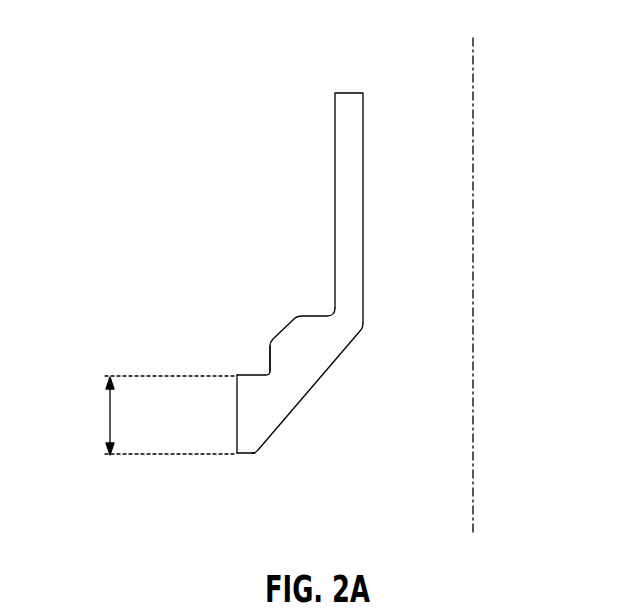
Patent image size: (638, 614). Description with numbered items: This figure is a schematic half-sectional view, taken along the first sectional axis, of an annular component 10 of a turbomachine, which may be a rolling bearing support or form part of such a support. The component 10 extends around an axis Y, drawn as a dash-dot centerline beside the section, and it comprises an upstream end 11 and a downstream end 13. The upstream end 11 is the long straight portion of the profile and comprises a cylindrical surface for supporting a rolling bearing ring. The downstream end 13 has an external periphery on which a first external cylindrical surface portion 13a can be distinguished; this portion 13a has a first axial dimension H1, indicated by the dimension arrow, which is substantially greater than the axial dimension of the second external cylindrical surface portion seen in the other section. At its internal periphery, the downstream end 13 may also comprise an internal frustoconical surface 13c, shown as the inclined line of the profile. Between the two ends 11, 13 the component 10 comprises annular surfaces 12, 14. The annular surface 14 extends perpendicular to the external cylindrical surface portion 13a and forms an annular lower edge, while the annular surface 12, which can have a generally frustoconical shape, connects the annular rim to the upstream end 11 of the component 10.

The annular component 10 is at (313, 256).
The upstream end 11 is at (363, 196).
The annular surface 12 is at (285, 325).
The downstream end 13 is at (287, 414).
The first external cylindrical surface portion 13a is at (237, 422).
The internal frustoconical surface 13c is at (330, 365).
The annular surface 14 is at (255, 373).
The first axial dimension H1 is at (107, 420).
The axis Y is at (475, 530).